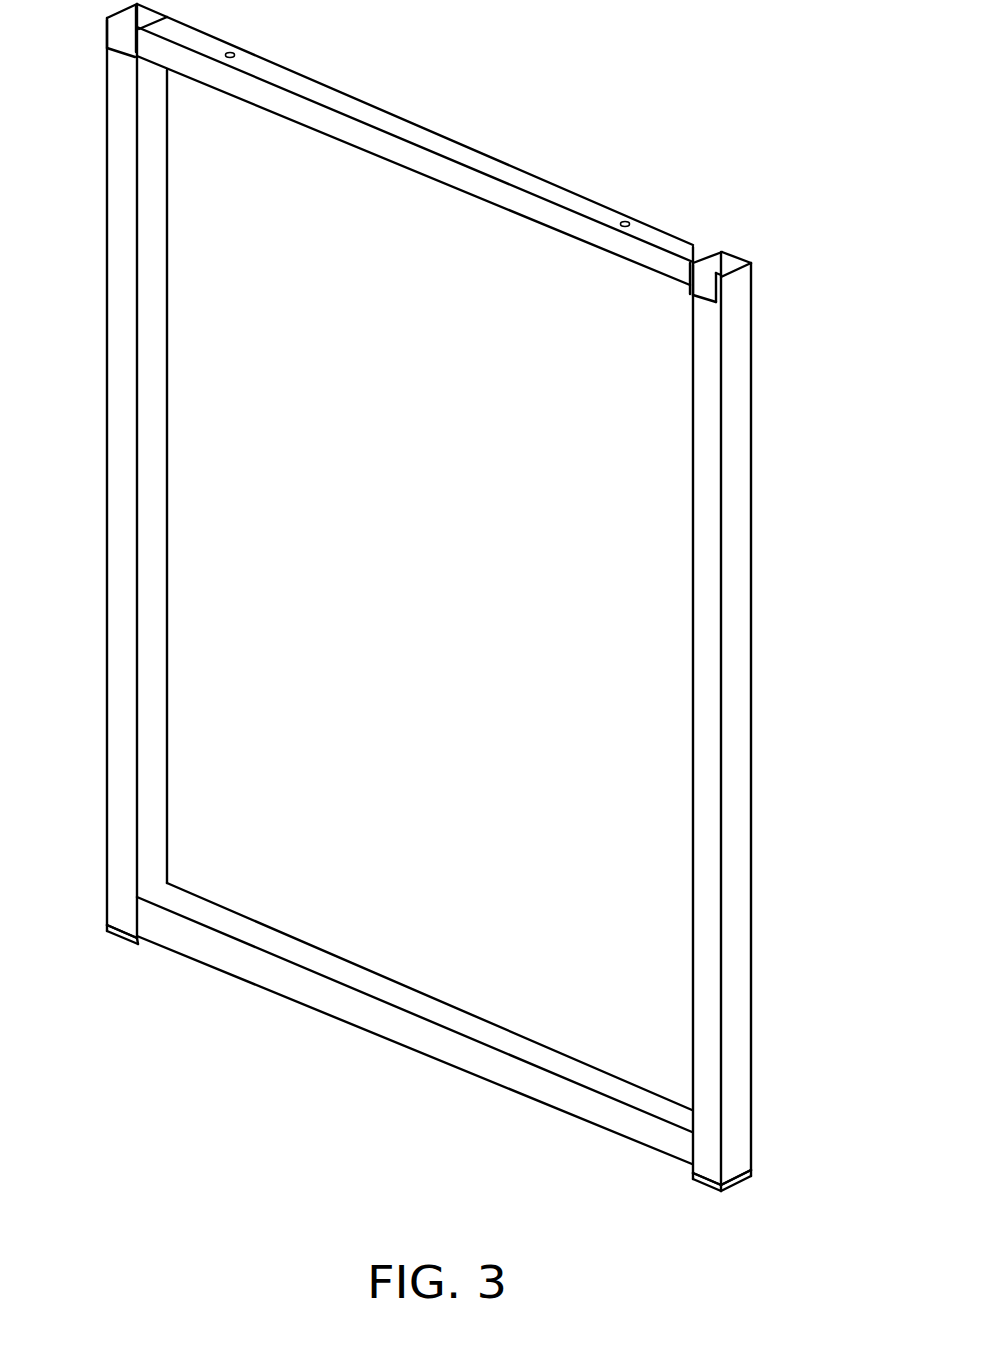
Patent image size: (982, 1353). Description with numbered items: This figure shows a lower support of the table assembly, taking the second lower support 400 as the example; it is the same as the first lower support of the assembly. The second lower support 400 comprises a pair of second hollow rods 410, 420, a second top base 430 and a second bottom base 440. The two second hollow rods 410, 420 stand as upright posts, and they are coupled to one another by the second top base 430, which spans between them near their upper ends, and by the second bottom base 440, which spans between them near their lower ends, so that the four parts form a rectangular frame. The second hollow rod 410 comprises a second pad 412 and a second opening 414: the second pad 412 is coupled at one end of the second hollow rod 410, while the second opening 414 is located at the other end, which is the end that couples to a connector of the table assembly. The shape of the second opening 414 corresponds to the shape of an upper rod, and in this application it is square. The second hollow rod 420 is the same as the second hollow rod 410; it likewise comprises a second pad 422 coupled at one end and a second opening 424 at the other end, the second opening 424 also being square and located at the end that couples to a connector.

The second lower support 400 is at (796, 70).
The second hollow rod 410 is at (744, 720).
The second pad 412 is at (707, 1183).
The second opening 414 is at (707, 300).
The second hollow rod 420 is at (152, 538).
The second pad 422 is at (121, 932).
The second opening 424 is at (123, 52).
The second top base 430 is at (425, 135).
The second bottom base 440 is at (412, 1040).